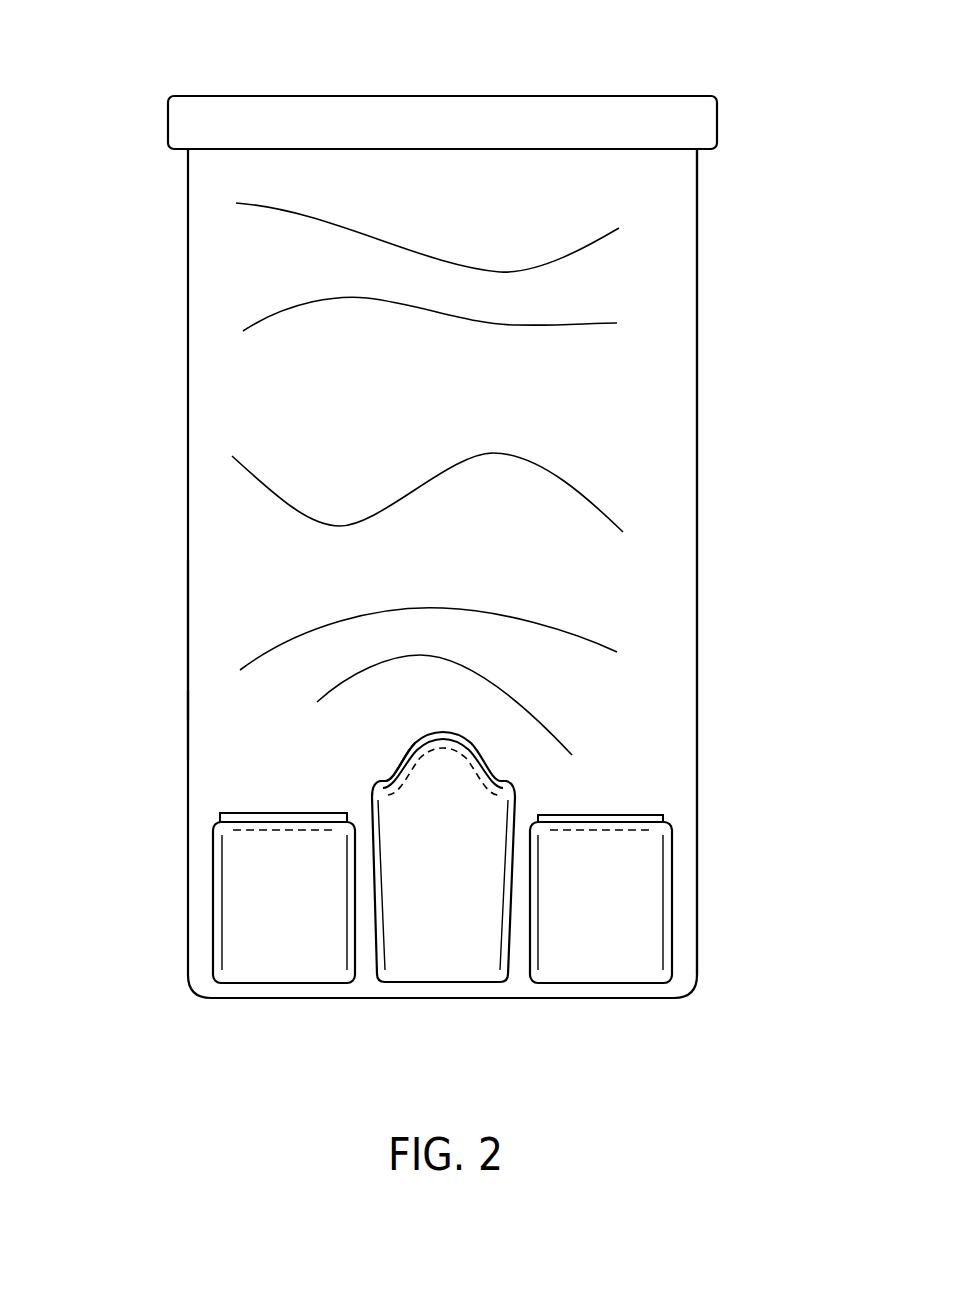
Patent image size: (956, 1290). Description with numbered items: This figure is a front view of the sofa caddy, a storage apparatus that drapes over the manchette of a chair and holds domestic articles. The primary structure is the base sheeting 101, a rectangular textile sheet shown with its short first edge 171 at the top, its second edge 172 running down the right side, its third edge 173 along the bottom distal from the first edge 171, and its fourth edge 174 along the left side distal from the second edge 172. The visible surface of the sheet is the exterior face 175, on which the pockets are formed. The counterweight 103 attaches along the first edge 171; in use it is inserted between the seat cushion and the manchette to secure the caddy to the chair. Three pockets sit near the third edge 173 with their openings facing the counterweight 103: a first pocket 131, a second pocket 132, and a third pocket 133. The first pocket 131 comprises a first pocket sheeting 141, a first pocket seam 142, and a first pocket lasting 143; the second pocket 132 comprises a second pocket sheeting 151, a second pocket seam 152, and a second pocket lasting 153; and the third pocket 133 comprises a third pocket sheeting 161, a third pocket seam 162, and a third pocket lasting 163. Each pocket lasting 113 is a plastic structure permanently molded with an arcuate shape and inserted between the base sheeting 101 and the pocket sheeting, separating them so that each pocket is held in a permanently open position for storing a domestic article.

The base sheeting 101 is at (662, 319).
The counterweight 103 is at (538, 108).
The pocket lasting 113 is at (398, 762).
The first pocket 131 is at (260, 998).
The second pocket 132 is at (398, 982).
The third pocket 133 is at (665, 982).
The first pocket sheeting 141 is at (233, 930).
The first pocket seam 142 is at (217, 863).
The first pocket lasting 143 is at (263, 818).
The second pocket sheeting 151 is at (490, 840).
The second pocket seam 152 is at (517, 793).
The second pocket lasting 153 is at (493, 768).
The third pocket sheeting 161 is at (642, 928).
The third pocket seam 162 is at (667, 887).
The third pocket lasting 163 is at (633, 813).
The first edge 171 is at (520, 150).
The second edge 172 is at (697, 215).
The third edge 173 is at (580, 998).
The fourth edge 174 is at (188, 638).
The exterior face 175 is at (213, 704).